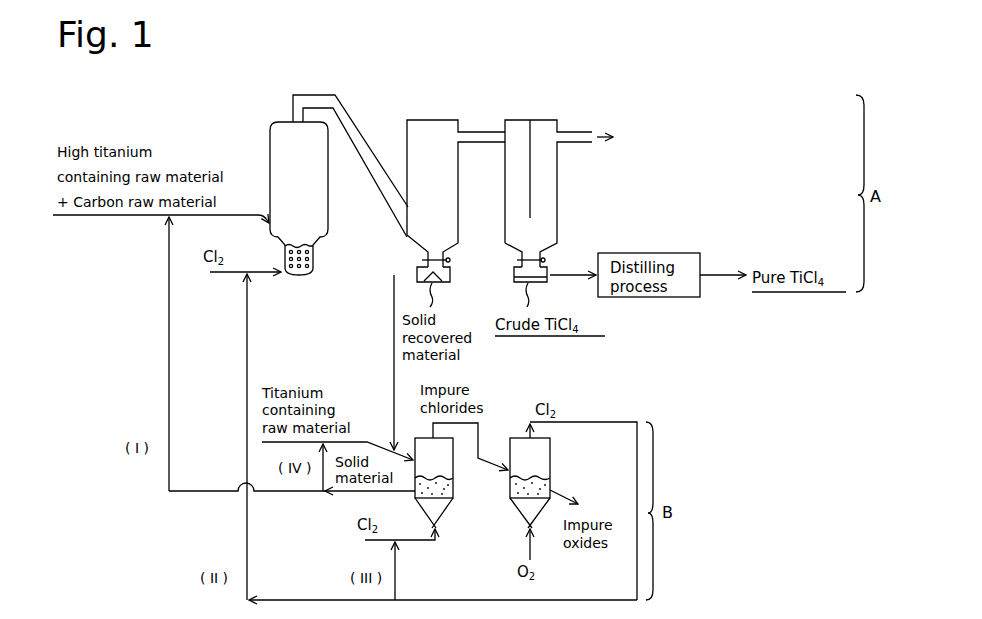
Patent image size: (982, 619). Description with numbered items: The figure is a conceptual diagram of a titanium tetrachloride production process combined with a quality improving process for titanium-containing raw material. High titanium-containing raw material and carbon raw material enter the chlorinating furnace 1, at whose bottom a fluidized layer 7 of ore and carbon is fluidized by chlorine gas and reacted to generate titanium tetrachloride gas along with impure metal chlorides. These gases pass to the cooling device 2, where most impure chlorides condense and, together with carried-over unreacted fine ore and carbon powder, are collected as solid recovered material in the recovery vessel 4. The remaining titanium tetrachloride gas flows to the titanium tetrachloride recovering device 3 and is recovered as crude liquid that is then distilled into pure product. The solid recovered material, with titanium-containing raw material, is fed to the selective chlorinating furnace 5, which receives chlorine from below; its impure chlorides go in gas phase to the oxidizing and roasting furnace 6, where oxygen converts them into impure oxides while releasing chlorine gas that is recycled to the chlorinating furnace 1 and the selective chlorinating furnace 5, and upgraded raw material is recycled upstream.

The chlorinating furnace 1 is at (316, 213).
The cooling device 2 is at (433, 128).
The titanium tetrachloride recovering device 3 is at (552, 195).
The solid recovered material recovery vessel 4 is at (450, 275).
The selective chlorinating furnace 5 is at (447, 462).
The oxidizing and roasting furnace 6 is at (541, 463).
The fluidized layer 7 is at (311, 256).